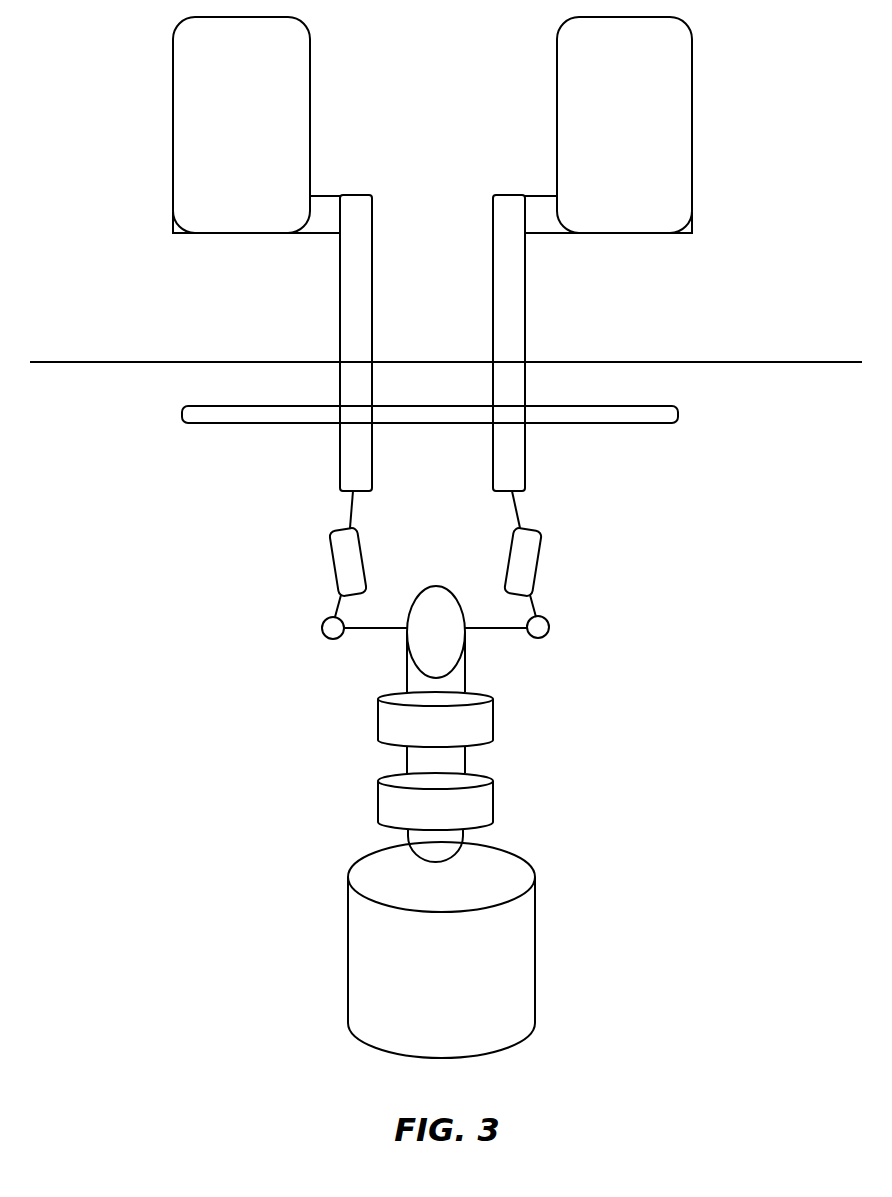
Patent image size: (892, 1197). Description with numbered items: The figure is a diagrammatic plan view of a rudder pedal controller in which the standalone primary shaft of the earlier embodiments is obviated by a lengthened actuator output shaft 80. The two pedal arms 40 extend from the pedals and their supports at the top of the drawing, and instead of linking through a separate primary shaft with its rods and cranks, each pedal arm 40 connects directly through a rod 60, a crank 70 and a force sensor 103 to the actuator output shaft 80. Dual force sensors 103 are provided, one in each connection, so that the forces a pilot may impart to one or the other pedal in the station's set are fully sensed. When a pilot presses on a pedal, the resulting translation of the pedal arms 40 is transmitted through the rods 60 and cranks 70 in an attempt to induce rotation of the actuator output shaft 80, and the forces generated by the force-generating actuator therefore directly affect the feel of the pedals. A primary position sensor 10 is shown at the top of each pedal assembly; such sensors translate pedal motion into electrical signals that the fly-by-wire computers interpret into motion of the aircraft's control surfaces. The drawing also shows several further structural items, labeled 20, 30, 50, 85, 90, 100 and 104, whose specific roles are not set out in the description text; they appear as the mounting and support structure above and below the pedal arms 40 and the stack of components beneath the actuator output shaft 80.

The primary position sensor 10 is at (229, 137).
The mounting bracket 20 is at (329, 182).
The ground/reference surface 30 is at (740, 344).
The pedal arm 40 is at (326, 320).
The cross beam 50 is at (694, 413).
The rod 60 is at (333, 507).
The crank 70 is at (370, 642).
The actuator output shaft 80 is at (422, 642).
The pivot joint 85 is at (327, 641).
The gearbox 90 is at (422, 737).
The generator 100 is at (415, 820).
The force sensor 103 is at (317, 556).
The storage unit 104 is at (420, 977).